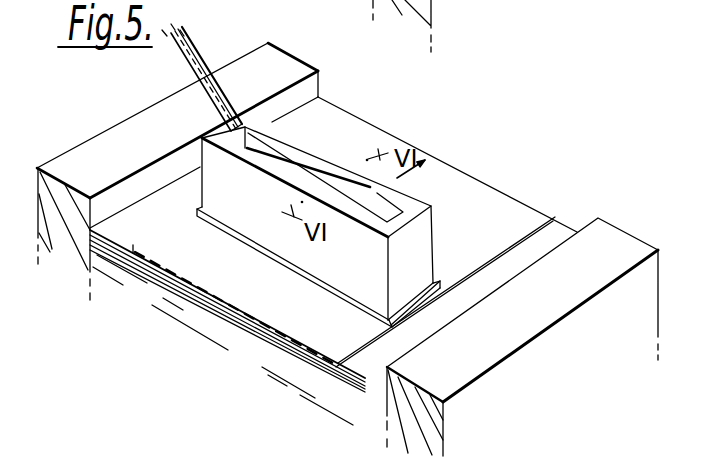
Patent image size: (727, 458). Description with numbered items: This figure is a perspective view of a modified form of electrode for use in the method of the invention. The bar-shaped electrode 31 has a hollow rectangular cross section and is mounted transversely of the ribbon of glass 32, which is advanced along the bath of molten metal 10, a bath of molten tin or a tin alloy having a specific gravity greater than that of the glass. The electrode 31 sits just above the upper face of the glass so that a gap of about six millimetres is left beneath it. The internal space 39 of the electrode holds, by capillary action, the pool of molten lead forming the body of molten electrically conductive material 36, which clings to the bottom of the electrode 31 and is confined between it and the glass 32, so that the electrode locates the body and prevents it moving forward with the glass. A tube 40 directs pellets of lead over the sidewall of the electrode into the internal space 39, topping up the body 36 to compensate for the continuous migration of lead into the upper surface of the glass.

The bath of molten metal 10 is at (355, 371).
The bar-shaped electrode 31 is at (423, 232).
The ribbon of glass 32 is at (244, 287).
The body of molten electrically conductive material 36 is at (250, 242).
The internal space of the electrode 39 is at (307, 163).
The tube 40 is at (197, 53).